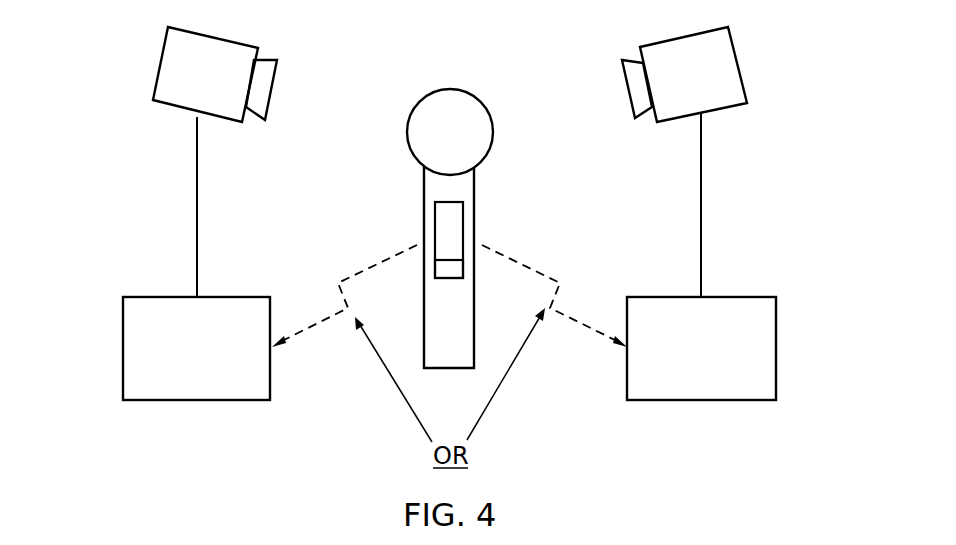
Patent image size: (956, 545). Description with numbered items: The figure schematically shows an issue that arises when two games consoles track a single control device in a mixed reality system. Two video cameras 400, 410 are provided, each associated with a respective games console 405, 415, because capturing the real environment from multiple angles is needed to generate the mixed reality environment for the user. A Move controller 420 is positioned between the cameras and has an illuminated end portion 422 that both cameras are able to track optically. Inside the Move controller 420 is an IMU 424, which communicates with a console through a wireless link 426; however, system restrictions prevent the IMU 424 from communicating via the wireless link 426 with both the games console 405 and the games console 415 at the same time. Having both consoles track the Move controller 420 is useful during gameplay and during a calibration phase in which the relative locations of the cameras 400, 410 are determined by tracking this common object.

The video camera 400 is at (162, 62).
The games console 405 is at (122, 348).
The video camera 410 is at (740, 62).
The games console 415 is at (777, 347).
The Move controller 420 is at (487, 205).
The illuminated end portion 422 is at (487, 130).
The IMU 424 is at (457, 232).
The wireless link 426 is at (465, 268).